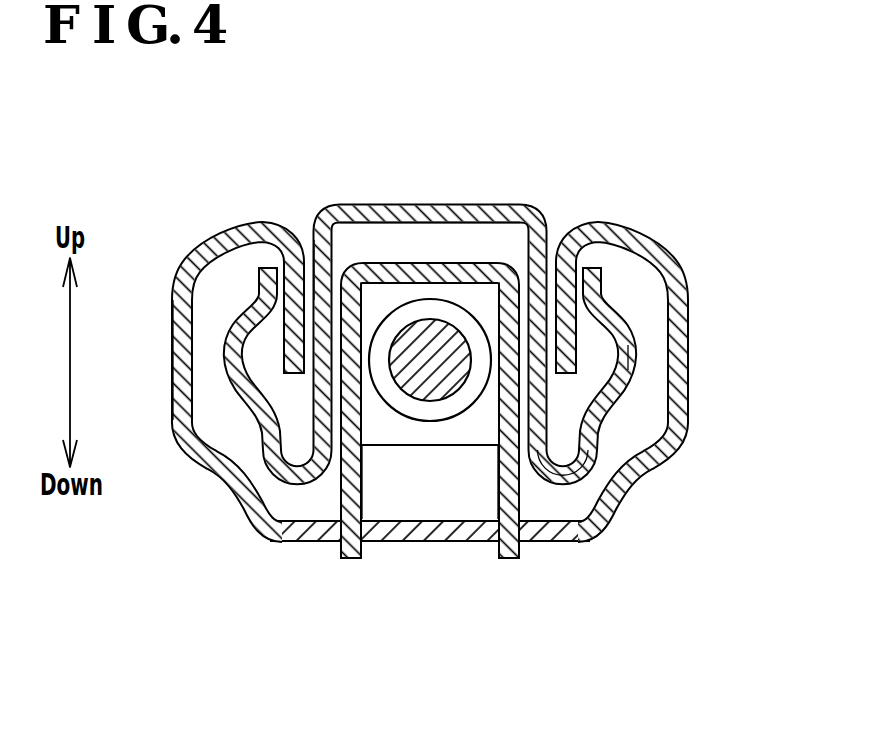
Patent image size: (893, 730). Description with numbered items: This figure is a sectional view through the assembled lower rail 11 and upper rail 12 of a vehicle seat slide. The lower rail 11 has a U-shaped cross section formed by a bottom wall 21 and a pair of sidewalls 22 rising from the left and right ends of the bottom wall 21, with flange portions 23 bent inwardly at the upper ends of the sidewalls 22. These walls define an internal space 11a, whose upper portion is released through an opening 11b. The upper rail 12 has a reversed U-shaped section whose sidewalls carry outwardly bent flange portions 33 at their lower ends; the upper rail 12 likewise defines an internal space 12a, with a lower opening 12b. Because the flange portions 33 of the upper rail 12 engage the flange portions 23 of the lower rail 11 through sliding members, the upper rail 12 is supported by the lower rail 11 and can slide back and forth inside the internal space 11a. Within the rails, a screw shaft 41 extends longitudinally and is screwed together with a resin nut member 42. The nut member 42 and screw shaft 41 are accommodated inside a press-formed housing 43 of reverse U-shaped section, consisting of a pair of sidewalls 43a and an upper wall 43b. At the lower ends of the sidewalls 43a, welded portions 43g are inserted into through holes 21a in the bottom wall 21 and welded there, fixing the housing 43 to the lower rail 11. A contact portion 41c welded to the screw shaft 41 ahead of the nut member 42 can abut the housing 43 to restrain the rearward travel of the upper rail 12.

The lower rail 11 is at (179, 259).
The internal space 11a is at (430, 503).
The opening 11b is at (567, 222).
The upper rail 12 is at (345, 201).
The internal space 12a is at (457, 233).
The opening 12b is at (507, 490).
The bottom wall 21 is at (480, 546).
The through hole 21a is at (338, 544).
The sidewall 22 is at (173, 318).
The flange portion 23 is at (284, 342).
The flange portion 33 is at (623, 397).
The screw shaft 41 is at (433, 383).
The contact portion 41c is at (410, 407).
The nut member 42 is at (379, 437).
The housing 43 is at (516, 262).
The sidewall 43a is at (341, 487).
The upper wall 43b is at (403, 267).
The welded portion 43g is at (347, 562).